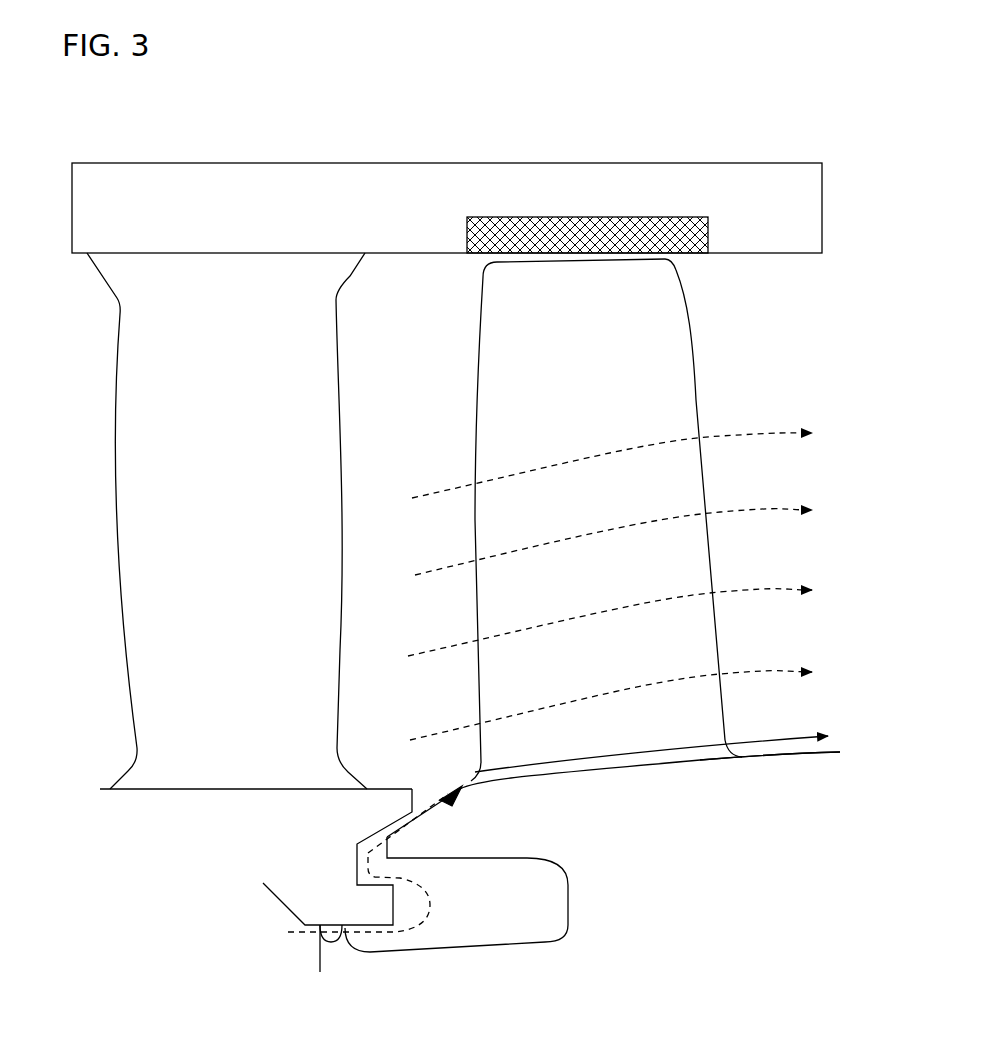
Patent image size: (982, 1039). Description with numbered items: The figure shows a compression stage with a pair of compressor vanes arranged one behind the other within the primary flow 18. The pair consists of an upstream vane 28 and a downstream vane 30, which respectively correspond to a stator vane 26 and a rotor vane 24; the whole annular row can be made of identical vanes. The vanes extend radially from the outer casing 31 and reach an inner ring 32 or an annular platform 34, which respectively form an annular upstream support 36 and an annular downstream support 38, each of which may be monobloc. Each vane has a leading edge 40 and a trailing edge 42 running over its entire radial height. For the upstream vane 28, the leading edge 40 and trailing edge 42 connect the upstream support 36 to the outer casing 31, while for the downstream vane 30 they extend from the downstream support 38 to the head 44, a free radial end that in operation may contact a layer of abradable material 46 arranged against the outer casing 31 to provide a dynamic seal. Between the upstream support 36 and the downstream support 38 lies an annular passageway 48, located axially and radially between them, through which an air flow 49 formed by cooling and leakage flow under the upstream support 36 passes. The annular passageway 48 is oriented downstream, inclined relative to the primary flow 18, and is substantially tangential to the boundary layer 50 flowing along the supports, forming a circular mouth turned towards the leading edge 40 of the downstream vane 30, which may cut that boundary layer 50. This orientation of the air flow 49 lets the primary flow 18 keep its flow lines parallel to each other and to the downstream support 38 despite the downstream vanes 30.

The primary flow 18 is at (647, 445).
The rotor vane 24 is at (588, 428).
The stator vane 26 is at (232, 464).
The upstream vane 28 is at (232, 602).
The downstream vane 30 is at (588, 596).
The outer casing 31 is at (262, 225).
The inner ring 32 is at (167, 818).
The annular platform 34 is at (770, 758).
The upstream support 36 is at (232, 850).
The downstream support 38 is at (617, 771).
The leading edge 40 is at (115, 358).
The trailing edge 42 is at (338, 392).
The head 44 is at (573, 258).
The layer of abradable material 46 is at (477, 243).
The annular passageway 48 is at (397, 829).
The air flow 49 is at (432, 907).
The boundary layer 50 is at (752, 740).